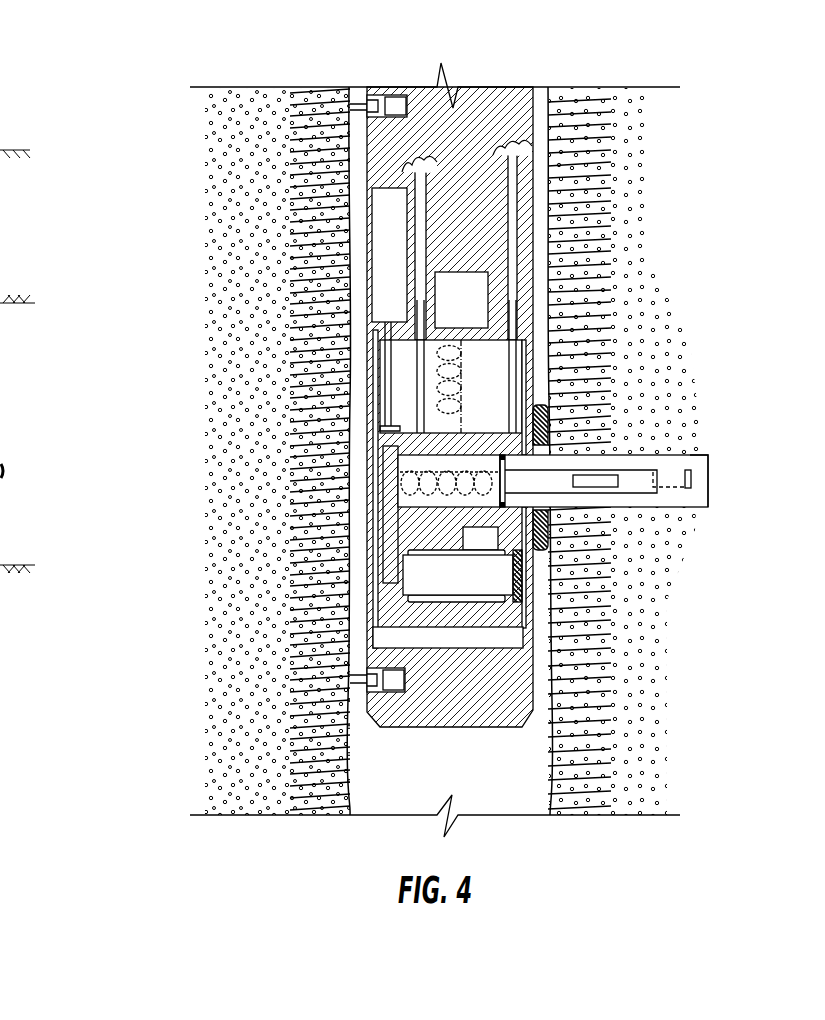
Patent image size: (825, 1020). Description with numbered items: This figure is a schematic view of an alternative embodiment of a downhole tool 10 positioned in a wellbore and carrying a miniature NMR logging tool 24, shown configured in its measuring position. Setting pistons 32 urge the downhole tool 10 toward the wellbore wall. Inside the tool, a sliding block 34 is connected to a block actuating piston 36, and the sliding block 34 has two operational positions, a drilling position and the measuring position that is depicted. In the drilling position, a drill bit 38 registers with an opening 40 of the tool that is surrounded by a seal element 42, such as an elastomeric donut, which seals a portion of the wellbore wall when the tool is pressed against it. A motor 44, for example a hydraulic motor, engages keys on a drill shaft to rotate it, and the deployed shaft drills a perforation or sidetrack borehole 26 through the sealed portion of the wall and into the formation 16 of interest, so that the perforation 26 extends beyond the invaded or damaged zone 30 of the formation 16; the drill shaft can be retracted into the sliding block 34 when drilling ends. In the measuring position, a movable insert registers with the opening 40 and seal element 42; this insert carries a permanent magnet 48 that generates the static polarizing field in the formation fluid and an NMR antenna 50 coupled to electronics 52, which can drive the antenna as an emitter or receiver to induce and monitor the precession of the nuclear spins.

The downhole tool 10 is at (455, 745).
The formation 16 is at (218, 351).
The miniature NMR logging tool 24 is at (716, 434).
The perforation or sidetrack borehole 26 is at (688, 457).
The invaded/damaged zone 30 is at (590, 256).
The setting pistons 32 is at (360, 102).
The sliding block 34 is at (393, 538).
The block actuating piston 36 is at (402, 274).
The drill bit 38 is at (472, 588).
The opening 40 is at (538, 455).
The seal element 42 is at (556, 418).
The motor 44 is at (466, 542).
The permanent magnet 48 is at (597, 481).
The NMR antenna 50 is at (693, 479).
The electronics 52 is at (476, 310).